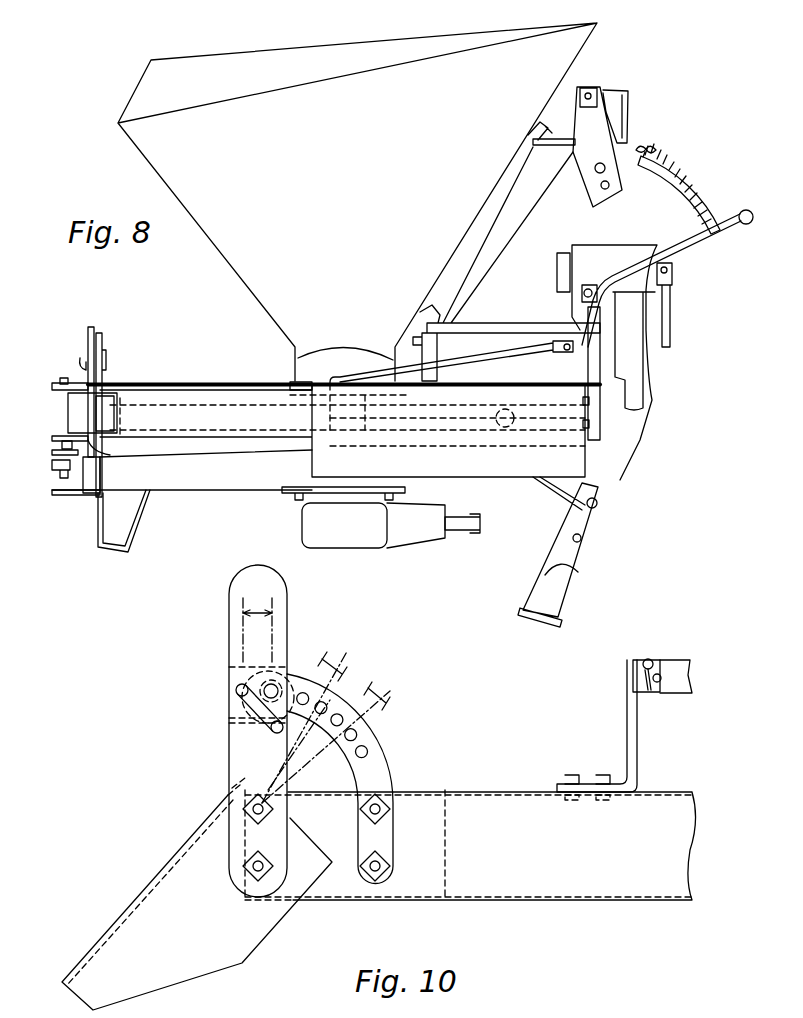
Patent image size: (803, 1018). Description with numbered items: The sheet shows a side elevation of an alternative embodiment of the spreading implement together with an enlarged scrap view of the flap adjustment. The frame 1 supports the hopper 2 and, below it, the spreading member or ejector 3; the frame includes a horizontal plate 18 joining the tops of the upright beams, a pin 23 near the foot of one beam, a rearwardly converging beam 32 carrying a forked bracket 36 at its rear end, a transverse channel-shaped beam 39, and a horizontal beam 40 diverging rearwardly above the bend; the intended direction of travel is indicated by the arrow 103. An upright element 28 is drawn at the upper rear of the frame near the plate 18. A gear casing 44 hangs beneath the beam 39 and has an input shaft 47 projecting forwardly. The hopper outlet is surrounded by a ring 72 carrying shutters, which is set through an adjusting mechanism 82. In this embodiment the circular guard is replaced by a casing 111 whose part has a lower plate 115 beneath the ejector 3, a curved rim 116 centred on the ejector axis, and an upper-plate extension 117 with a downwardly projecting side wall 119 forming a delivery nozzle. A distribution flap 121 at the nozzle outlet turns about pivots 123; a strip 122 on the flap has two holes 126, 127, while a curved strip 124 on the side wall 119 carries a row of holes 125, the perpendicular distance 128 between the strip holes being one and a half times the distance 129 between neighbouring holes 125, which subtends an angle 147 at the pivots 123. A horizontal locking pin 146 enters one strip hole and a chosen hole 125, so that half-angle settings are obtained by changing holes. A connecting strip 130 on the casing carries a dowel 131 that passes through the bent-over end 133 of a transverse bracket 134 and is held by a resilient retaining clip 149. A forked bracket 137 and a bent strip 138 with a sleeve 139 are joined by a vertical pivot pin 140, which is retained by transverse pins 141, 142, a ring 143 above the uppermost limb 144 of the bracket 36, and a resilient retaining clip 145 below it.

In FIG. 8, the frame 1 is at (654, 421).
In FIG. 8, the hopper 2 is at (234, 283).
In FIG. 8, the spreading member or ejector 3 is at (220, 378).
In FIG. 8, the horizontal plate 18 is at (565, 148).
In FIG. 8, the pin 23 is at (605, 500).
In FIG. 8, the mast 28 is at (600, 88).
In FIG. 8, the beam 32 is at (230, 485).
In FIG. 8, the forked bracket 36 is at (72, 500).
In FIG. 8, the transverse channel-shaped beam 39 is at (405, 458).
In FIG. 8, the horizontally disposed beam 40 is at (512, 327).
In FIG. 8, the gear casing 44 is at (300, 528).
In FIG. 8, the input shaft 47 is at (465, 533).
In FIG. 8, the ring 72 is at (300, 383).
In FIG. 8, the adjusting mechanism 82 is at (698, 197).
In FIG. 8, the intended direction of travel 103 is at (652, 544).
In FIG. 8, the casing 111 is at (170, 375).
In FIG. 10, the casing 111 is at (683, 783).
In FIG. 10, the lower plate 115 is at (615, 902).
In FIG. 8, the curved rim 116 is at (283, 438).
In FIG. 10, the extension 117 is at (483, 790).
In FIG. 10, the side wall 119 is at (458, 895).
In FIG. 8, the distribution flap 121 is at (200, 455).
In FIG. 10, the distribution flap 121 is at (185, 860).
In FIG. 8, the strip 122 is at (80, 330).
In FIG. 10, the strip 122 is at (229, 625).
In FIG. 10, the pivots 123 is at (268, 810).
In FIG. 8, the curved strip 124 is at (100, 341).
In FIG. 10, the curved strip 124 is at (383, 780).
In FIG. 10, the holes 125 is at (367, 745).
In FIG. 10, the hole 126 is at (230, 692).
In FIG. 10, the hole 127 is at (292, 672).
In FIG. 10, the perpendicular distance 128 is at (268, 607).
In FIG. 10, the perpendicular distance 129 is at (340, 658).
In FIG. 10, the strip 130 is at (628, 742).
In FIG. 10, the dowel 131 is at (658, 695).
In FIG. 10, the bent-over end 133 is at (633, 678).
In FIG. 10, the transverse bracket 134 is at (672, 660).
In FIG. 8, the forked bracket 137 is at (92, 442).
In FIG. 8, the bent strip 138 is at (68, 417).
In FIG. 8, the sleeve 139 is at (58, 398).
In FIG. 8, the pivot pin 140 is at (68, 380).
In FIG. 8, the transverse pin 141 is at (58, 380).
In FIG. 8, the transverse pin 142 is at (62, 445).
In FIG. 8, the ring 143 is at (55, 458).
In FIG. 8, the uppermost limb 144 is at (83, 462).
In FIG. 8, the resilient retaining clip 145 is at (60, 468).
In FIG. 10, the locking pin 146 is at (278, 733).
In FIG. 10, the angle 147 is at (387, 697).
In FIG. 10, the resilient retaining clip 149 is at (645, 655).